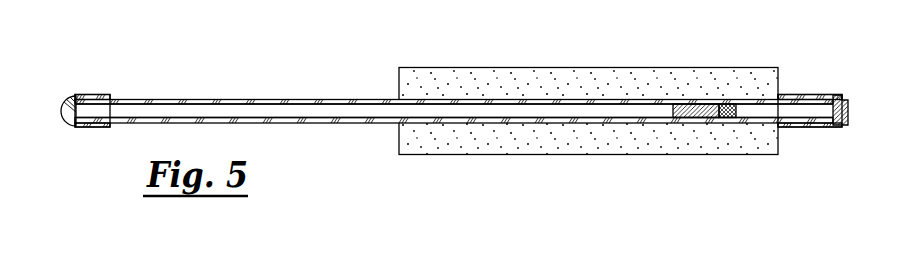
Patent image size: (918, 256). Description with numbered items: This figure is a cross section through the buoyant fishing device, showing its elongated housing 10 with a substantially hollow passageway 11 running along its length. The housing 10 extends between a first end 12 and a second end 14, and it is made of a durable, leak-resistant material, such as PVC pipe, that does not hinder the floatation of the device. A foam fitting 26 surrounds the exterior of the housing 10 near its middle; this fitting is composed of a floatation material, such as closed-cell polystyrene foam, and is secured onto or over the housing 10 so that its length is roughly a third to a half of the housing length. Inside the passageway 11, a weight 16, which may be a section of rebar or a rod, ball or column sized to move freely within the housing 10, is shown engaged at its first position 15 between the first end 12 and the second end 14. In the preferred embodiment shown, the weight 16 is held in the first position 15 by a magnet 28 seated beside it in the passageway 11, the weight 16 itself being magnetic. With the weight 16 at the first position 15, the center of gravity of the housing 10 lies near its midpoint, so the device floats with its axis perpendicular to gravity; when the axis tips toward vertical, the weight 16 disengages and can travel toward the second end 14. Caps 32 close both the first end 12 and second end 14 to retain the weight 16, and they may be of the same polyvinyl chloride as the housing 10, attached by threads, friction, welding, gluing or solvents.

The housing 10 is at (283, 100).
The passageway 11 is at (300, 114).
The first end 12 is at (827, 95).
The second end 14 is at (100, 128).
The first position 15 is at (678, 118).
The weight 16 is at (694, 108).
The foam fitting 26 is at (510, 83).
The magnet 28 is at (726, 112).
The caps 32 is at (70, 99).